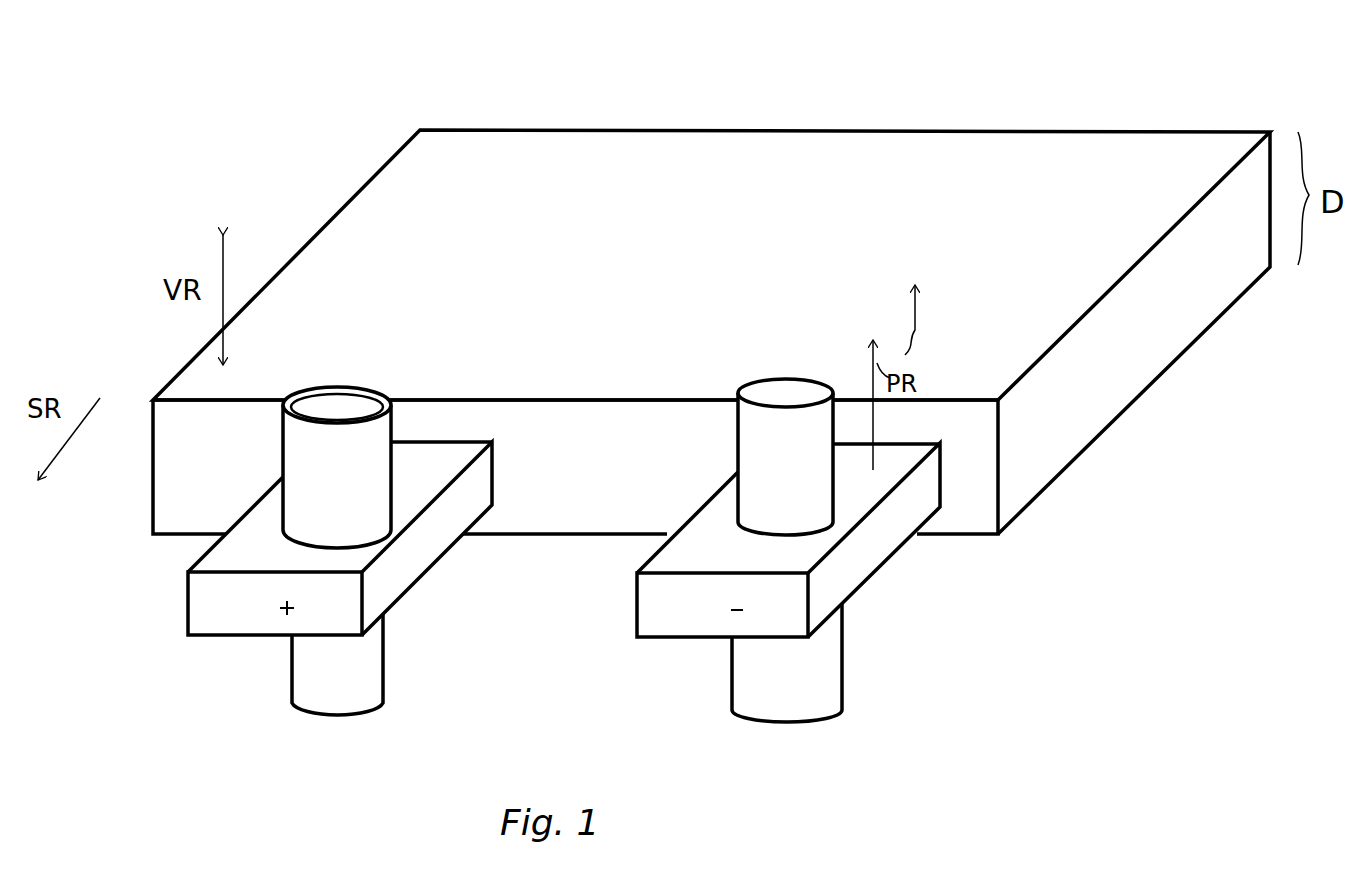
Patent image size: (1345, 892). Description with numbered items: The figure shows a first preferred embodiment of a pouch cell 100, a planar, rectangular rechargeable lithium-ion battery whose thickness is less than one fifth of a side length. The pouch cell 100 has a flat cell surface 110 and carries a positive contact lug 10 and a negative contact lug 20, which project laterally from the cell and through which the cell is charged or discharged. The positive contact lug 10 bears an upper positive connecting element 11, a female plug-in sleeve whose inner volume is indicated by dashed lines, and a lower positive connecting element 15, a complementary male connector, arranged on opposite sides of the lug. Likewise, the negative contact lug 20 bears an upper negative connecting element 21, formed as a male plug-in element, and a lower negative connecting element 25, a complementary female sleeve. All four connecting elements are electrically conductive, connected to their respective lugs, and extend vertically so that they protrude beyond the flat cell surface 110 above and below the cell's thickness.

The pouch cell 100 is at (1100, 170).
The flat cell surface 110 is at (408, 232).
The positive contact lug 10 is at (211, 613).
The upper positive connecting element 11 is at (303, 470).
The lower positive connecting element 15 is at (301, 703).
The negative contact lug 20 is at (657, 620).
The upper negative connecting element 21 is at (815, 493).
The lower negative connecting element 25 is at (830, 693).